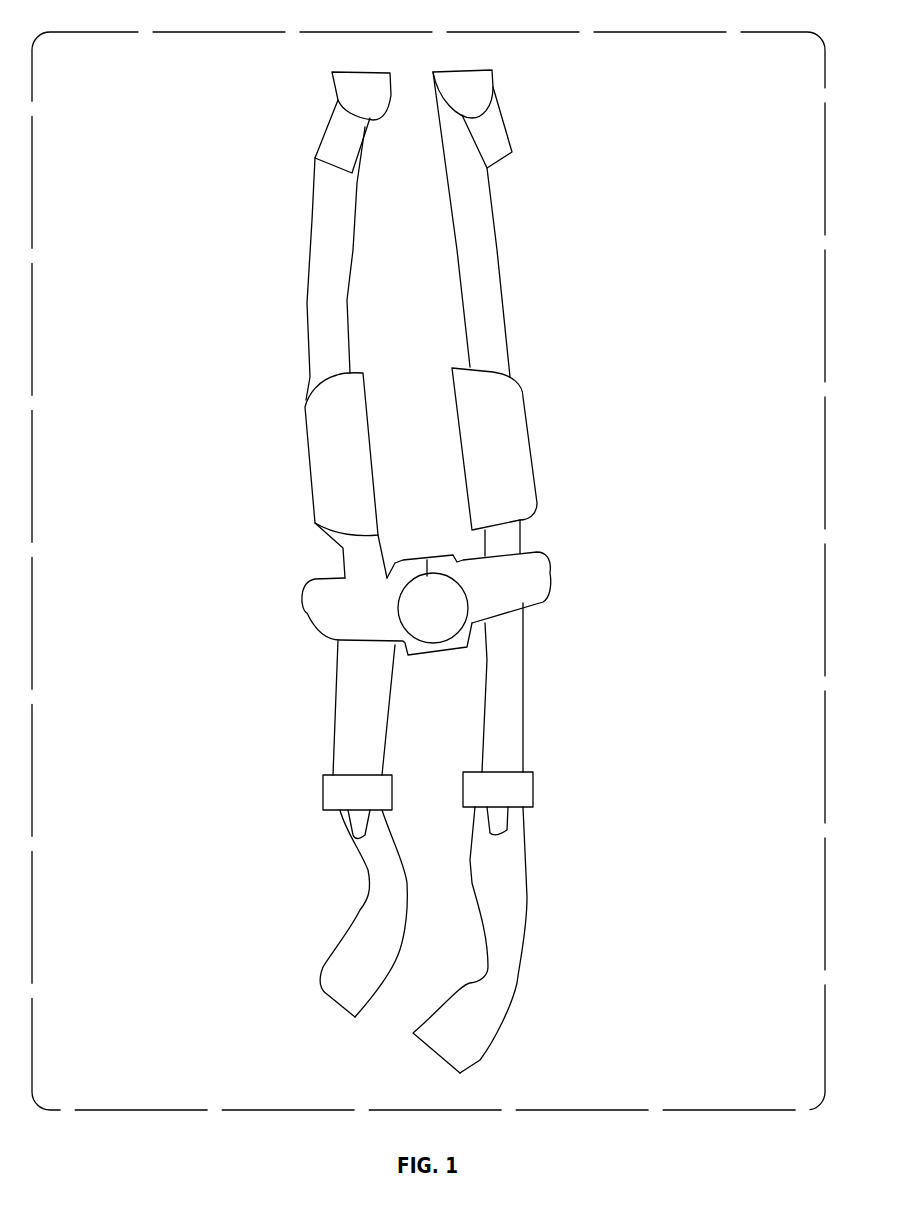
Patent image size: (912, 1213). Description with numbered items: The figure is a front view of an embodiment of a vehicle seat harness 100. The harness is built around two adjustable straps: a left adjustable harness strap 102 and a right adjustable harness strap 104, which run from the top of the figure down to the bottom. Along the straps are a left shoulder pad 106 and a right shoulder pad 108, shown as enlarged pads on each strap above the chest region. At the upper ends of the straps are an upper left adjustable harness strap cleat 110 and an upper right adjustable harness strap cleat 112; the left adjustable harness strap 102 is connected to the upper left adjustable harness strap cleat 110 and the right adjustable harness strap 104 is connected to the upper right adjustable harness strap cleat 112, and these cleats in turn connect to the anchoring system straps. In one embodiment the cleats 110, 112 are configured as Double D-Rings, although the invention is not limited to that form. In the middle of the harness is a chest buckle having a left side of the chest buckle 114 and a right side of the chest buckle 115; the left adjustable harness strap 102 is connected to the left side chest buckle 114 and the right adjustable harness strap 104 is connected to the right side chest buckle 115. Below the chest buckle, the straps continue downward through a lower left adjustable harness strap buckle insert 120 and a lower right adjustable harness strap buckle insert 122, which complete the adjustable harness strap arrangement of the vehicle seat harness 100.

The vehicle seat harness 100 is at (608, 1043).
The left adjustable harness strap 102 is at (493, 220).
The right adjustable harness strap 104 is at (323, 203).
The left shoulder pad 106 is at (507, 420).
The right shoulder pad 108 is at (320, 422).
The upper left adjustable harness strap cleat 110 is at (493, 82).
The upper right adjustable harness strap cleat 112 is at (350, 82).
The left side of chest buckle 114 is at (517, 565).
The right side of chest buckle 115 is at (333, 602).
The lower left adjustable harness strap buckle insert 120 is at (533, 790).
The lower right adjustable harness strap buckle insert 122 is at (323, 787).